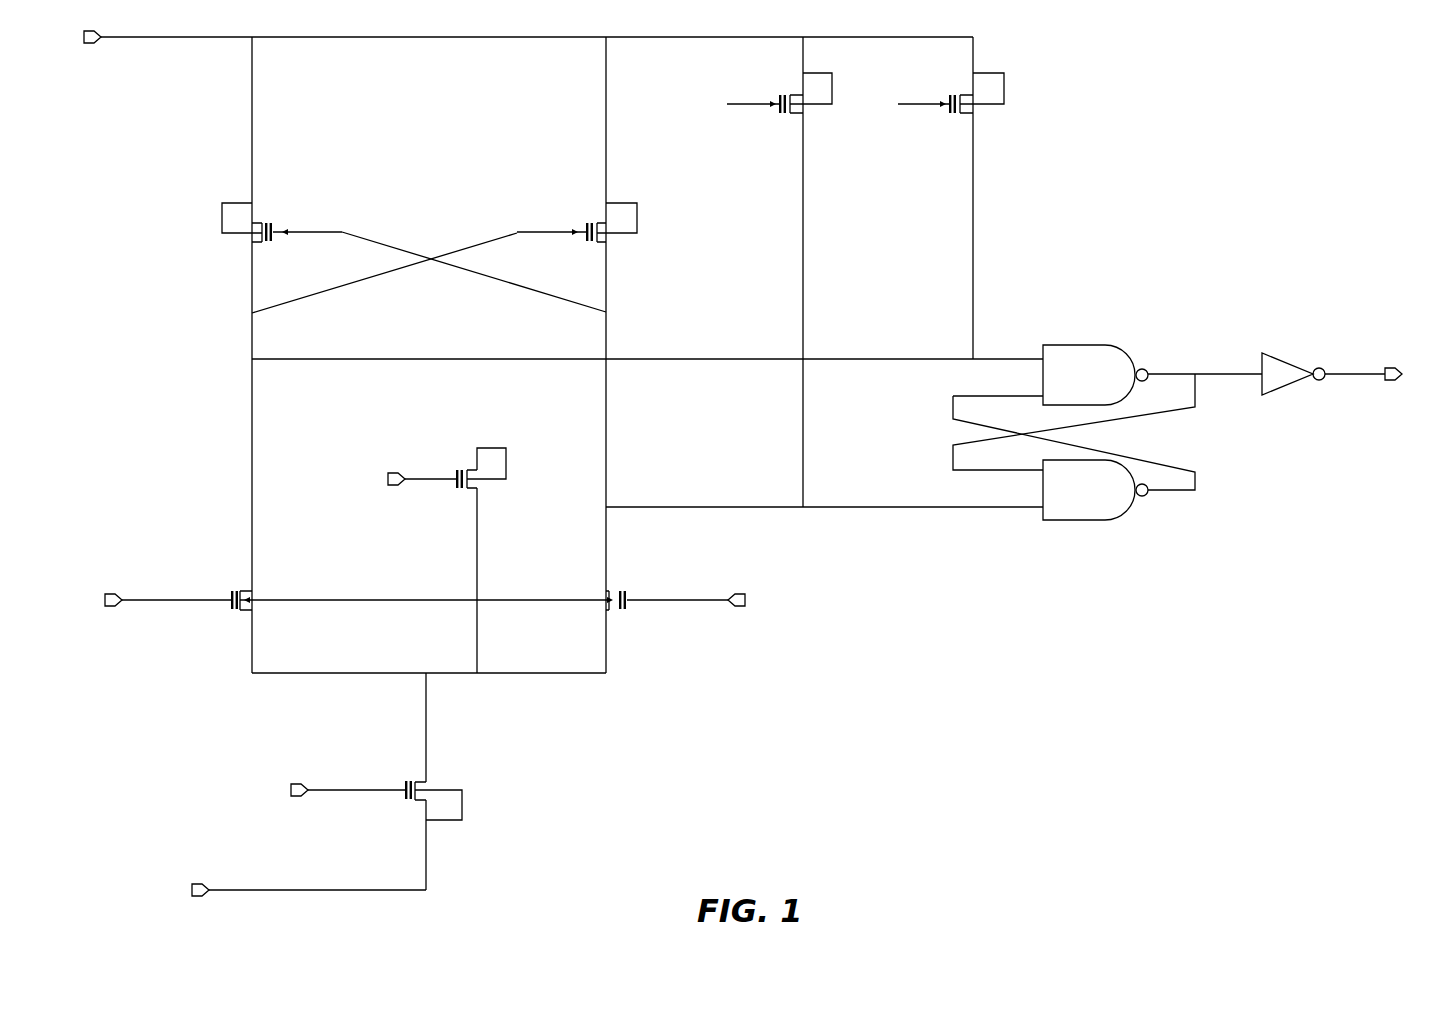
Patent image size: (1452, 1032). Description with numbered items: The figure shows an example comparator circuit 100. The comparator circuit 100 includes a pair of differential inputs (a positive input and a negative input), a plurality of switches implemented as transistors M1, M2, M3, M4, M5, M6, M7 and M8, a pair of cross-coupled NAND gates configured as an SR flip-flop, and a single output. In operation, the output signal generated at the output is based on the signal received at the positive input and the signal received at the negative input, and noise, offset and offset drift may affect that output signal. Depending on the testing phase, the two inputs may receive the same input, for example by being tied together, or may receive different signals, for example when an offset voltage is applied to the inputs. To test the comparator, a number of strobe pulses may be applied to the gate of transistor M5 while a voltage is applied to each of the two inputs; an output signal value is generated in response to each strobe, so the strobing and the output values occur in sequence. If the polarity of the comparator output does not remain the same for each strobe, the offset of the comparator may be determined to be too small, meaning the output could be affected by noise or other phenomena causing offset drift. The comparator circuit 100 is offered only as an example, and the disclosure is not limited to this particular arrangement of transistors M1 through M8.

The comparator circuit 100 is at (1305, 96).
The transistor M1 is at (282, 243).
The transistor M2 is at (340, 619).
The transistor M3 is at (695, 619).
The transistor M4 is at (577, 243).
The transistor M5 is at (376, 811).
The transistor M6 is at (779, 114).
The transistor M7 is at (951, 114).
The transistor M8 is at (447, 560).